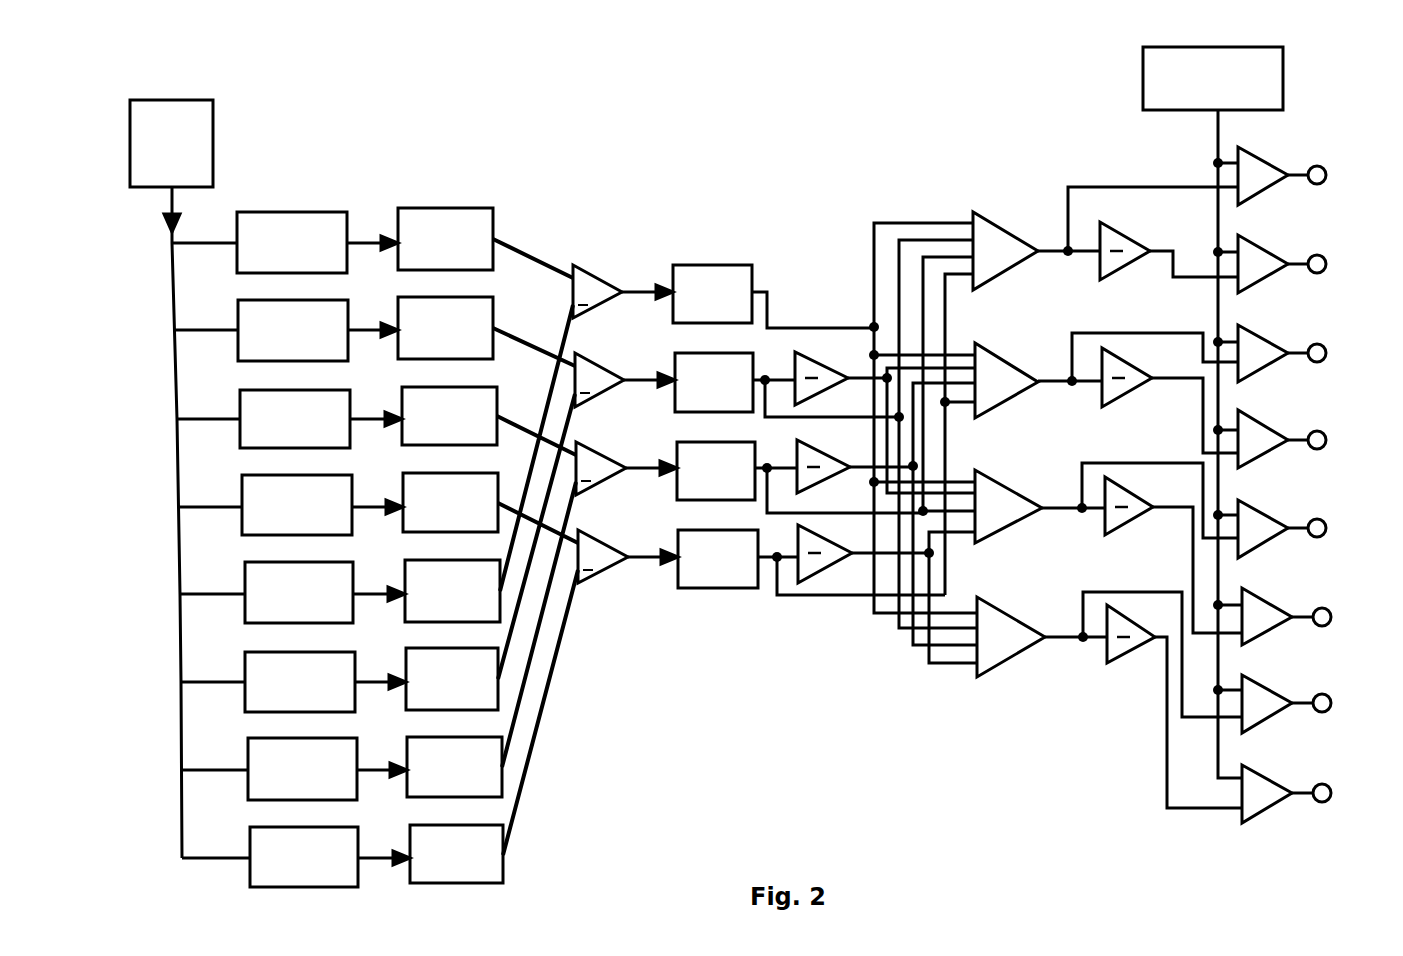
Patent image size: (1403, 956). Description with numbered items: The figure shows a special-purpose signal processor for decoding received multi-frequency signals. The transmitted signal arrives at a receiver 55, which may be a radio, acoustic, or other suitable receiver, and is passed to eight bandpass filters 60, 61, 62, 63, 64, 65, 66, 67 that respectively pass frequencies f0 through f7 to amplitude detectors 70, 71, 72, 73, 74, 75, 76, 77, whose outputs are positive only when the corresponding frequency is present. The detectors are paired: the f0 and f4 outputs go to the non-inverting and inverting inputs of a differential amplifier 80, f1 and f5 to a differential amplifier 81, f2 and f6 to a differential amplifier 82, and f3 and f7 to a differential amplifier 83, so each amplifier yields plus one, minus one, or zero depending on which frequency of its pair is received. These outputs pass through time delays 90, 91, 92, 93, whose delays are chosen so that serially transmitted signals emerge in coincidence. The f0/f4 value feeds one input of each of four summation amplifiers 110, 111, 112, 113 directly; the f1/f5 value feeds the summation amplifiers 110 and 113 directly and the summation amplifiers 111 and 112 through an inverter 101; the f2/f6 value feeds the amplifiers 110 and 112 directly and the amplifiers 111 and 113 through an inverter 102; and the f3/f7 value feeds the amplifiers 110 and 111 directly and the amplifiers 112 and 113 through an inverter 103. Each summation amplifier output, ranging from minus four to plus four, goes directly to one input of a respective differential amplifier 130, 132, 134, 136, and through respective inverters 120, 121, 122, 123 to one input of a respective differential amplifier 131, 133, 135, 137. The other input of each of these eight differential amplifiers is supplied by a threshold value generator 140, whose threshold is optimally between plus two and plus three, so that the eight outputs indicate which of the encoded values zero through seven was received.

The receiver 55 is at (160, 100).
The bandpass filter 60 is at (253, 212).
The bandpass filter 61 is at (254, 300).
The bandpass filter 62 is at (256, 390).
The bandpass filter 63 is at (258, 475).
The bandpass filter 64 is at (260, 562).
The bandpass filter 65 is at (262, 652).
The bandpass filter 66 is at (264, 738).
The bandpass filter 67 is at (266, 827).
The amplitude detector 70 is at (415, 208).
The amplitude detector 71 is at (415, 297).
The amplitude detector 72 is at (419, 387).
The amplitude detector 73 is at (420, 473).
The amplitude detector 74 is at (422, 560).
The amplitude detector 75 is at (424, 648).
The amplitude detector 76 is at (425, 737).
The amplitude detector 77 is at (428, 825).
The differential amplifier 80 is at (588, 272).
The differential amplifier 81 is at (589, 360).
The differential amplifier 82 is at (591, 449).
The differential amplifier 83 is at (592, 537).
The time delay 90 is at (691, 265).
The time delay 91 is at (692, 353).
The time delay 92 is at (694, 442).
The time delay 93 is at (695, 530).
The inverter 101 is at (810, 355).
The inverter 102 is at (812, 443).
The inverter 103 is at (811, 533).
The summation amplifier 110 is at (988, 223).
The summation amplifier 111 is at (989, 353).
The summation amplifier 112 is at (990, 482).
The summation amplifier 113 is at (993, 609).
The inverter 120 is at (1112, 226).
The inverter 121 is at (1114, 356).
The inverter 122 is at (1116, 484).
The inverter 123 is at (1116, 611).
The differential amplifier 130 is at (1250, 154).
The differential amplifier 131 is at (1250, 243).
The differential amplifier 132 is at (1250, 333).
The differential amplifier 133 is at (1250, 419).
The differential amplifier 134 is at (1250, 509).
The differential amplifier 135 is at (1255, 596).
The differential amplifier 136 is at (1255, 683).
The differential amplifier 137 is at (1255, 773).
The threshold value generator 140 is at (1263, 47).